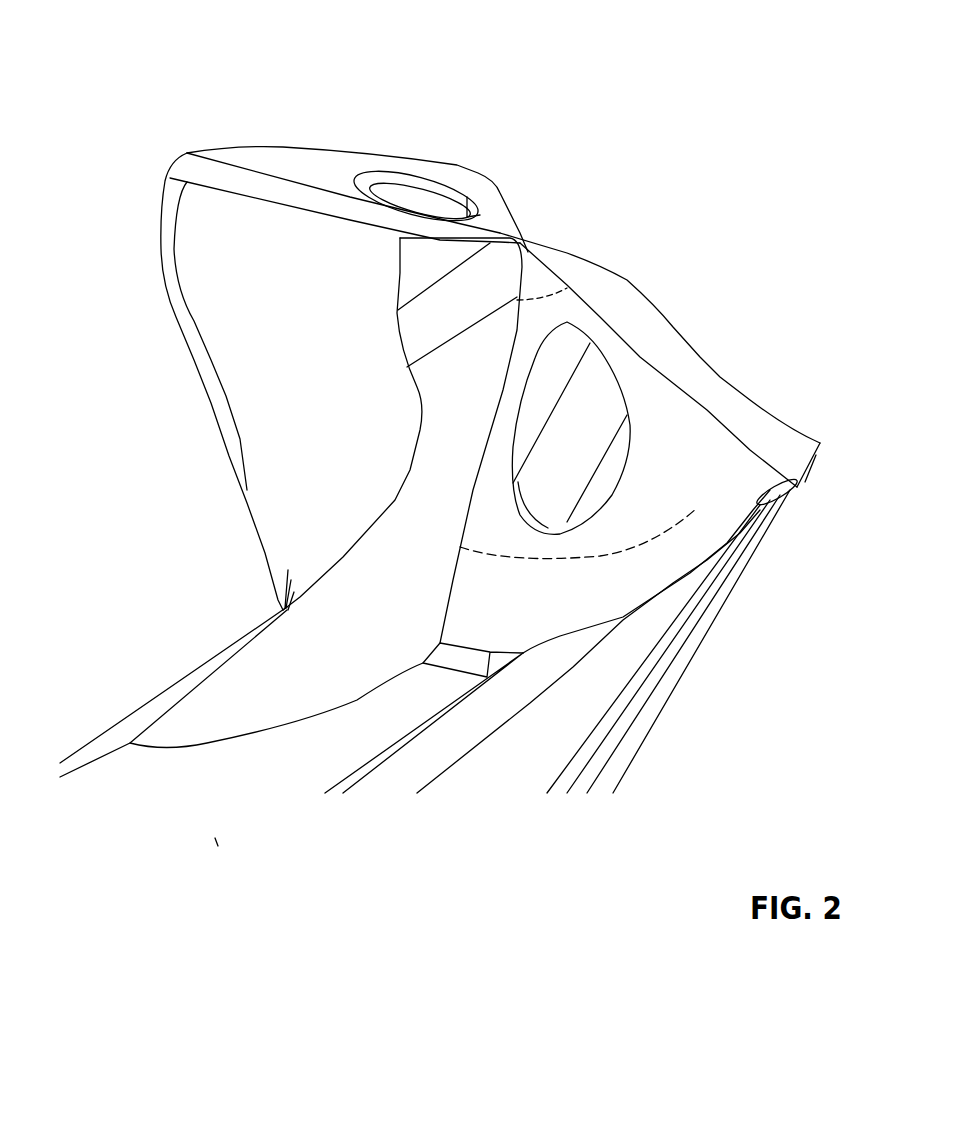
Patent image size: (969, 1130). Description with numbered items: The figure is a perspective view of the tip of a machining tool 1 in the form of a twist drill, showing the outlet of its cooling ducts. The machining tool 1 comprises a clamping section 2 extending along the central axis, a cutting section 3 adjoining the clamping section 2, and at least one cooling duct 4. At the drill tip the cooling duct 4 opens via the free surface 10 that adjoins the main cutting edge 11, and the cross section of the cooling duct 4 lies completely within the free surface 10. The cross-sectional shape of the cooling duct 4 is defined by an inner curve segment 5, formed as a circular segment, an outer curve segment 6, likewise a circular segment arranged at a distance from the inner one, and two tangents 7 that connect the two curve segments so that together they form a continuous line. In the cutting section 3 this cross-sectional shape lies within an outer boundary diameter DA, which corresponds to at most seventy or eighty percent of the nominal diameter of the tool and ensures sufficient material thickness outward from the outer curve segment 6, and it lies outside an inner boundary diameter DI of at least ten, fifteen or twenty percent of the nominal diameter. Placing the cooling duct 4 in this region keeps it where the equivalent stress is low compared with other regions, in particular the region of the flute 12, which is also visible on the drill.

The machining tool 1 is at (787, 442).
The clamping section 2 is at (220, 852).
The cutting section 3 is at (405, 715).
The cooling duct 4 is at (415, 183).
The inner curve segment 5 is at (477, 213).
The outer curve segment 6 is at (392, 160).
The tangents 7 is at (513, 443).
The free surface 10 is at (305, 160).
The main cutting edge 11 is at (250, 183).
The flute 12 is at (253, 432).
The outer boundary diameter DA is at (520, 558).
The inner boundary diameter DI is at (550, 297).